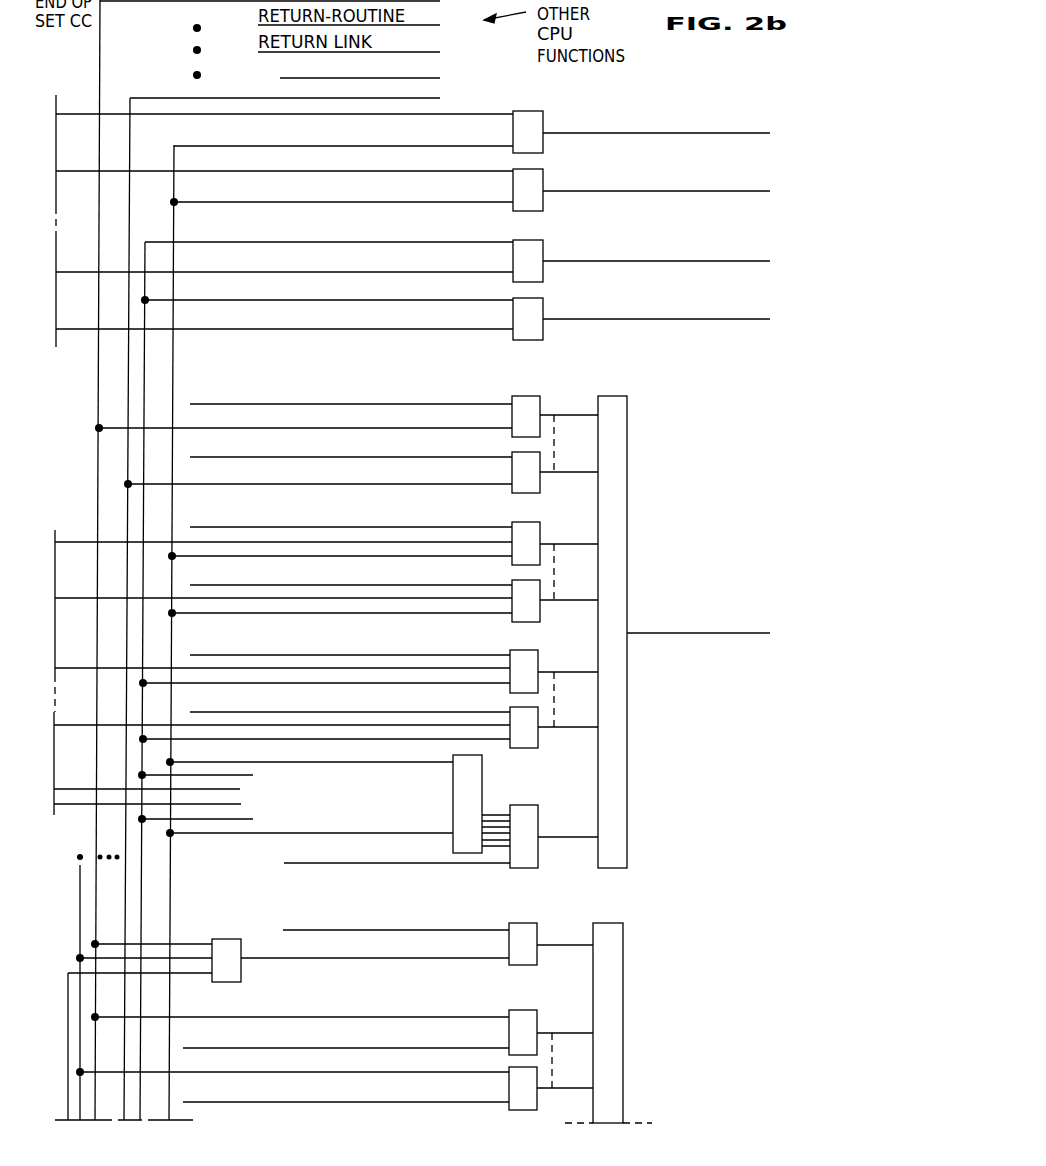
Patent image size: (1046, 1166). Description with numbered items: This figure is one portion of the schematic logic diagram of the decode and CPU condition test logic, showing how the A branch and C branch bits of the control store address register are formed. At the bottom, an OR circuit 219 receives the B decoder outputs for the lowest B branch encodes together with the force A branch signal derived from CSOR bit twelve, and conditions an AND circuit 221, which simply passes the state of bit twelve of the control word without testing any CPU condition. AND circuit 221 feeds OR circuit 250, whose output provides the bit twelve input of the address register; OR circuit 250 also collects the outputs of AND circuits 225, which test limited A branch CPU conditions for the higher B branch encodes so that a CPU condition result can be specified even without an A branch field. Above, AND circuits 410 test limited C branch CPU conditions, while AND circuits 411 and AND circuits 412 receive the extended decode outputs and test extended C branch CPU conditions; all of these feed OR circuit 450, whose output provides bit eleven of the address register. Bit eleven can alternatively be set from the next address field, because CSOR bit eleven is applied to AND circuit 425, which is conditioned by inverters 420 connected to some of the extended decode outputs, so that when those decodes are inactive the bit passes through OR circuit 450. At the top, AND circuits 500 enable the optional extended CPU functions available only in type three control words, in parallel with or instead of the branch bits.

The AND circuits 500 is at (638, 105).
The AND circuits 410 is at (548, 414).
The AND circuits 411 is at (546, 539).
The AND circuits 412 is at (547, 669).
The inverters 420 is at (453, 777).
The AND circuit 425 is at (541, 834).
The OR circuit 450 is at (605, 868).
The OR circuit 219 is at (241, 978).
The AND circuit 221 is at (537, 926).
The AND circuits 225 is at (542, 1031).
The OR circuit 250 is at (633, 1003).